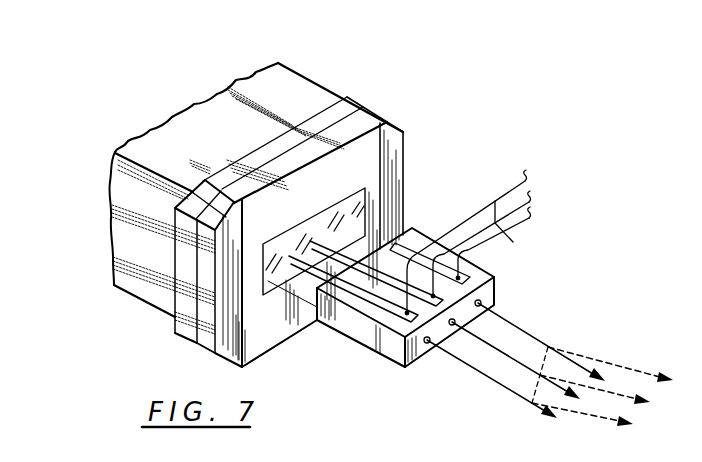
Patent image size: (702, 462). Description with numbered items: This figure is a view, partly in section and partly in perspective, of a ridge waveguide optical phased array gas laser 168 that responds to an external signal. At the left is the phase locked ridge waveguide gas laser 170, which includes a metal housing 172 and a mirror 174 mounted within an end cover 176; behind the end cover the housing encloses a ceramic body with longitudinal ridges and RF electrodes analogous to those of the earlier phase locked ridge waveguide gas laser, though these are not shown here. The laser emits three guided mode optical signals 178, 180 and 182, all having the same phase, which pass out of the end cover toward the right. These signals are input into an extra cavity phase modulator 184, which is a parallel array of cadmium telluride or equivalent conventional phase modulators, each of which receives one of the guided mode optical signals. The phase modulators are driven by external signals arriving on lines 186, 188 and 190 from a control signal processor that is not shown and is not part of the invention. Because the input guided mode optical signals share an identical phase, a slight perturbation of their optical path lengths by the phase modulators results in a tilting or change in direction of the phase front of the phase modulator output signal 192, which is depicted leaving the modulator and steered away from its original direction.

The ridge waveguide optical phased array gas laser 168 is at (112, 56).
The phase locked ridge waveguide gas laser 170 is at (324, 62).
The metal housing 172 is at (118, 199).
The mirror 174 is at (345, 192).
The end cover 176 is at (397, 137).
The guided mode optical signal 178 is at (292, 258).
The guided mode optical signal 180 is at (311, 242).
The guided mode optical signal 182 is at (387, 223).
The extra cavity phase modulator 184 is at (395, 357).
The line 186 is at (508, 220).
The line 188 is at (502, 232).
The line 190 is at (490, 245).
The phase modulator output signal 192 is at (548, 372).